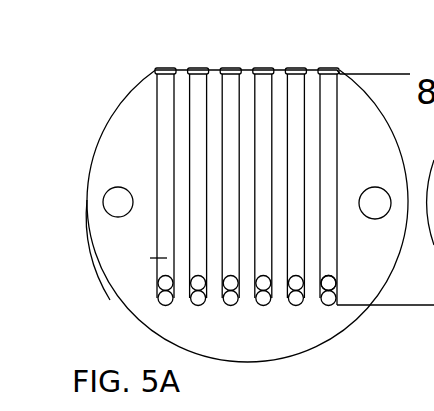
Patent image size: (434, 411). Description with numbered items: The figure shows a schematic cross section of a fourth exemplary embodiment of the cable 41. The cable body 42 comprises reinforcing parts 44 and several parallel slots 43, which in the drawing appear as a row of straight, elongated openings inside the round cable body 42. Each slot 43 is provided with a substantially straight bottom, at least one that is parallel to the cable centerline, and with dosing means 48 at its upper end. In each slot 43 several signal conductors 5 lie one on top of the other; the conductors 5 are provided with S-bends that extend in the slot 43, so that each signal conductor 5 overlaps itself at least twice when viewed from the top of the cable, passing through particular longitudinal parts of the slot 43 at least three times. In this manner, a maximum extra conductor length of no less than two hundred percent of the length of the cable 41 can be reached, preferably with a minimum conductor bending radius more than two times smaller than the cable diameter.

The cable 41 is at (84, 148).
The cable body 42 is at (100, 238).
The slot 43 is at (137, 267).
The reinforcing part 44 is at (118, 201).
The dosing means 48 is at (203, 72).
The signal conductor 5 is at (328, 284).